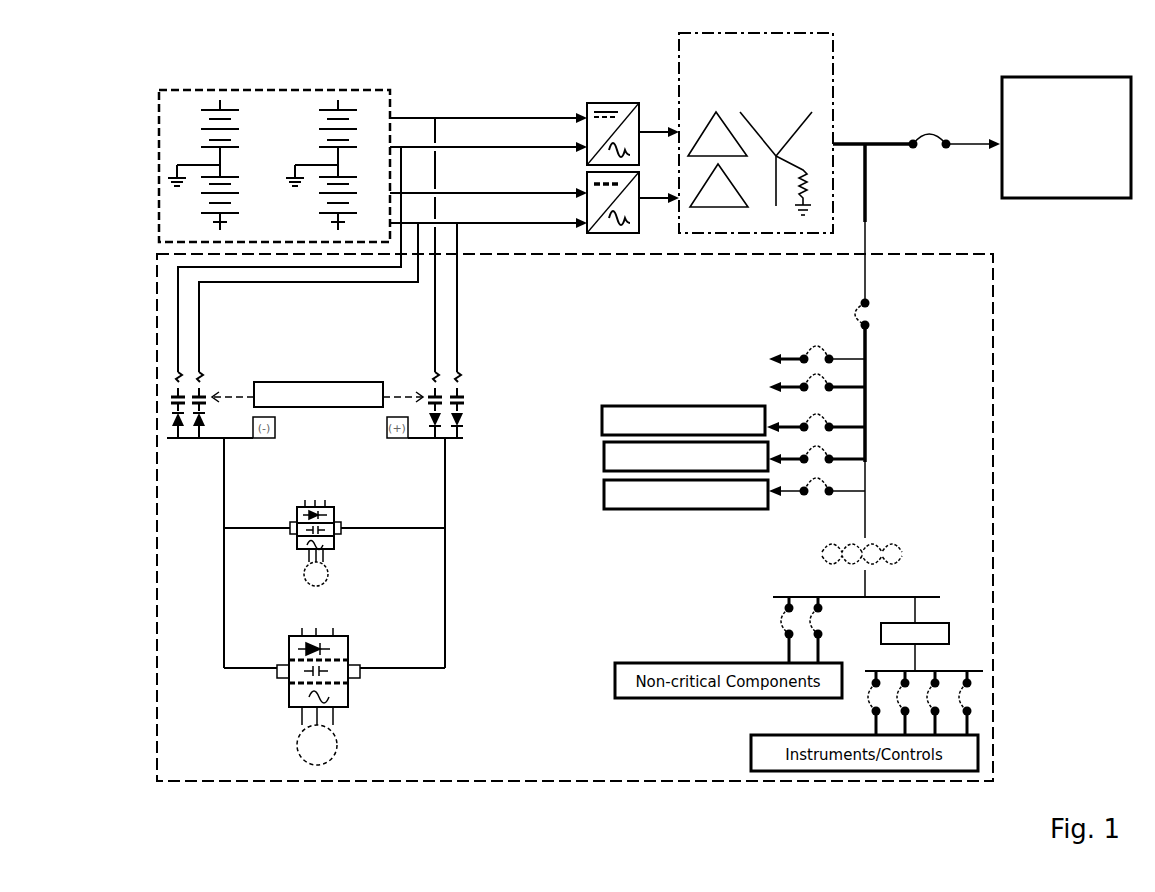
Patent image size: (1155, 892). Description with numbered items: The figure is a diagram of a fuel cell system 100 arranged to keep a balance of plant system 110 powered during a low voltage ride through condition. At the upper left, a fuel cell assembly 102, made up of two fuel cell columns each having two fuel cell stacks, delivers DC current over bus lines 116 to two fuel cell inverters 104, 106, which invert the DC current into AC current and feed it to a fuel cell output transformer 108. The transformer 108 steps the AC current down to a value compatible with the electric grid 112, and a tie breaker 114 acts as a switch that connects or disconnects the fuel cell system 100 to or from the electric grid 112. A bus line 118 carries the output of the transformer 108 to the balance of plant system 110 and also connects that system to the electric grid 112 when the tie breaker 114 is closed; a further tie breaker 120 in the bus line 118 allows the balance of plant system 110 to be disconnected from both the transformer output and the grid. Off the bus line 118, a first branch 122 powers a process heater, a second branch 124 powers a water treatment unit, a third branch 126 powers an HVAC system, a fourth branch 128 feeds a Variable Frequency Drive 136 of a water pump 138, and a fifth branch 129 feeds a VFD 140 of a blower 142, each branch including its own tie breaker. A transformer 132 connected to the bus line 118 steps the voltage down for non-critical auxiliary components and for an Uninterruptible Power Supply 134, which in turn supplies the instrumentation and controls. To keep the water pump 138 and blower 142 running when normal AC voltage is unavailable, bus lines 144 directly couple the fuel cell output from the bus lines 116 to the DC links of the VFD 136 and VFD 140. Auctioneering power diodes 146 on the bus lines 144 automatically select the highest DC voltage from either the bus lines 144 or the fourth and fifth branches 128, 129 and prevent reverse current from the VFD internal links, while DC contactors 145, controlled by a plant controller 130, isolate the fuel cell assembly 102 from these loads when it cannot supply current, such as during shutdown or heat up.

The fuel cell system 100 is at (121, 105).
The fuel cell assembly 102 is at (293, 85).
The fuel cell inverter 104 is at (598, 97).
The fuel cell inverter 106 is at (612, 227).
The fuel cell output transformer 108 is at (834, 95).
The balance of plant system 110 is at (993, 355).
The electric grid 112 is at (1066, 137).
The tie breaker 114 is at (932, 130).
The bus lines 116 is at (468, 147).
The bus line 118 is at (869, 208).
The tie breaker 120 is at (845, 305).
The first branch 122 is at (865, 420).
The second branch 124 is at (863, 457).
The third branch 126 is at (855, 488).
The fourth branch 128 is at (852, 357).
The fifth branch 129 is at (852, 383).
The plant controller 130 is at (302, 380).
The transformer 132 is at (895, 547).
The Uninterruptible Power Supply 134 is at (949, 631).
The Variable Frequency Drive 136 is at (333, 547).
The water pump 138 is at (328, 582).
The Variable Frequency Drive 140 is at (344, 689).
The blower 142 is at (335, 742).
The bus lines 144 is at (198, 322).
The DC contactors 145 is at (197, 393).
The auctioneering power diodes 146 is at (198, 413).